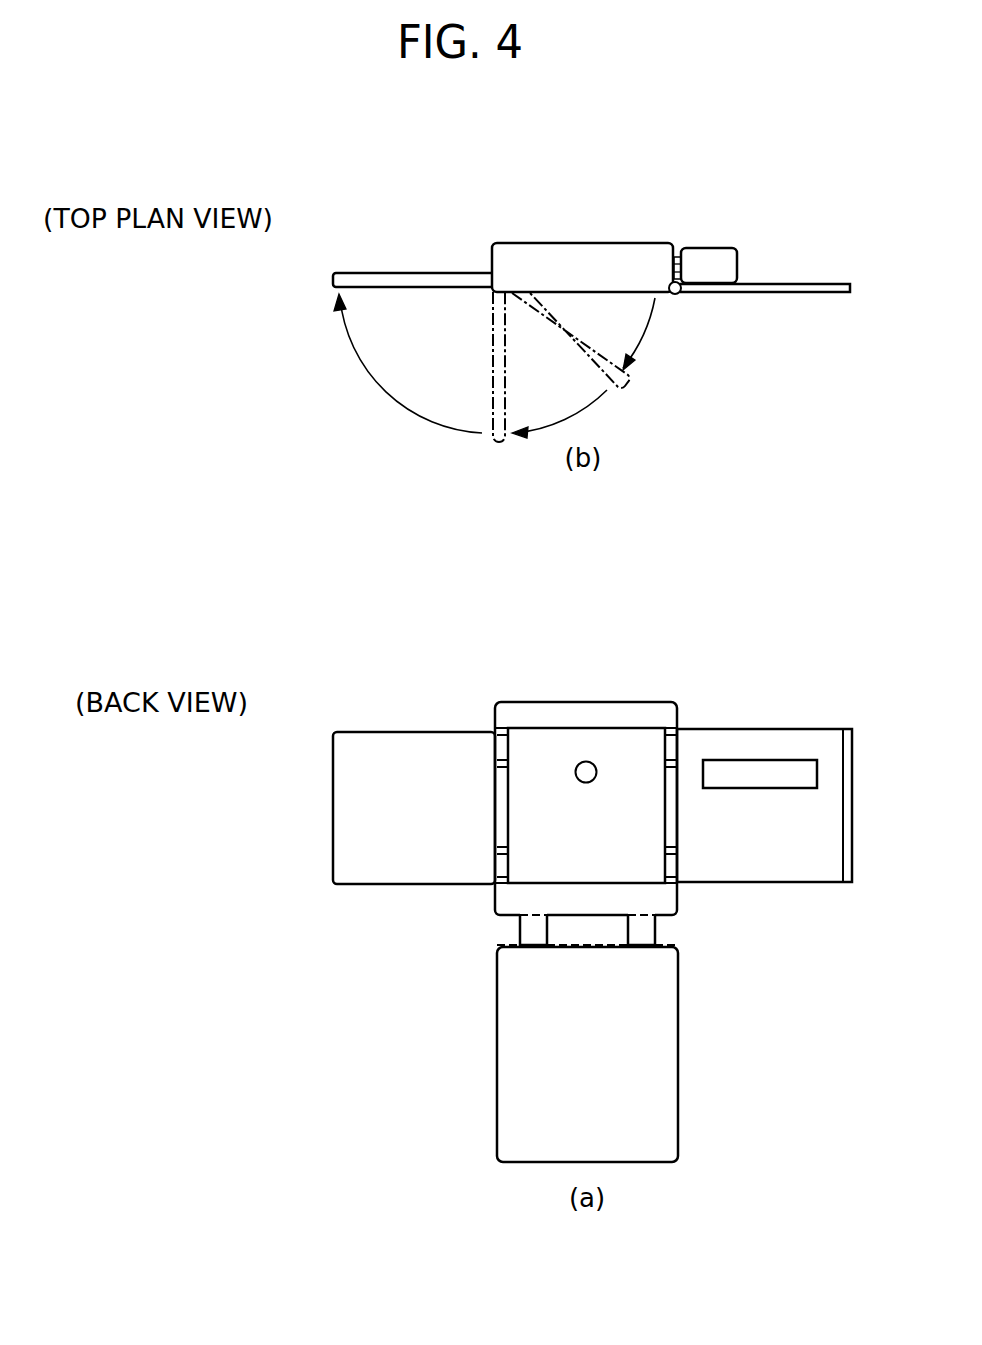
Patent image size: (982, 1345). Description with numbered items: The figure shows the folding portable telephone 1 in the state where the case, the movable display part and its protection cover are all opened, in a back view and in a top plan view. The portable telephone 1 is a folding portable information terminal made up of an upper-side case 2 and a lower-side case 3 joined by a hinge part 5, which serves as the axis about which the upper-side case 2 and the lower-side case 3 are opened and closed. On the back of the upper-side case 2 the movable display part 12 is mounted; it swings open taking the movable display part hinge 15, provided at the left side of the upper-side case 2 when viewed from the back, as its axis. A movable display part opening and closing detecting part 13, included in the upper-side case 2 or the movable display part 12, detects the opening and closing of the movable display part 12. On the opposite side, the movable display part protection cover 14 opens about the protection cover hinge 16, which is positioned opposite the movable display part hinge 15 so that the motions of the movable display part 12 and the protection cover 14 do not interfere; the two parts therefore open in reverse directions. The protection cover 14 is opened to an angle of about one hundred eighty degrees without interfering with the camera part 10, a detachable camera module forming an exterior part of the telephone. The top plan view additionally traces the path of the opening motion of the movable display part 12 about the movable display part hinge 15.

The portable telephone 1 is at (540, 242).
The upper-side case 2 is at (620, 255).
The lower-side case 3 is at (660, 1025).
The hinge part 5 is at (668, 930).
The camera part 10 is at (702, 257).
The movable display part 12 is at (413, 276).
The movable display part opening and closing detecting part 13 is at (593, 781).
The movable display part protection cover 14 is at (773, 862).
The movable display part hinge 15 is at (500, 866).
The protection cover hinge 16 is at (673, 750).